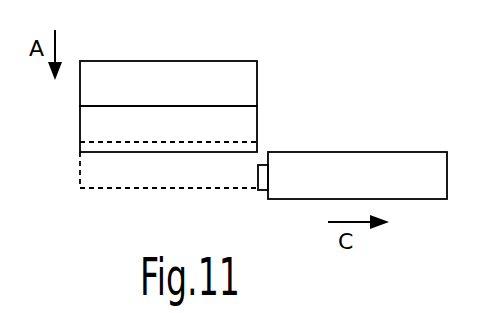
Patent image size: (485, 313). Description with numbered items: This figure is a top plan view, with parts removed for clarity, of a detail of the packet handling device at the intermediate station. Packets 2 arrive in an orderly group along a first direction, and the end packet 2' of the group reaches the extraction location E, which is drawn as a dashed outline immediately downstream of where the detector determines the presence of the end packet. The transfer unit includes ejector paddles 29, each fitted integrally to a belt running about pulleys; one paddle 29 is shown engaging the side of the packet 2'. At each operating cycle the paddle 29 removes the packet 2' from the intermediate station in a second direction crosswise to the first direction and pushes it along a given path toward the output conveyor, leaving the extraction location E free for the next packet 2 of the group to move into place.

The packet 2 is at (146, 101).
The packet 2' is at (357, 156).
The ejector paddle 29 is at (263, 190).
The extraction location E is at (108, 182).